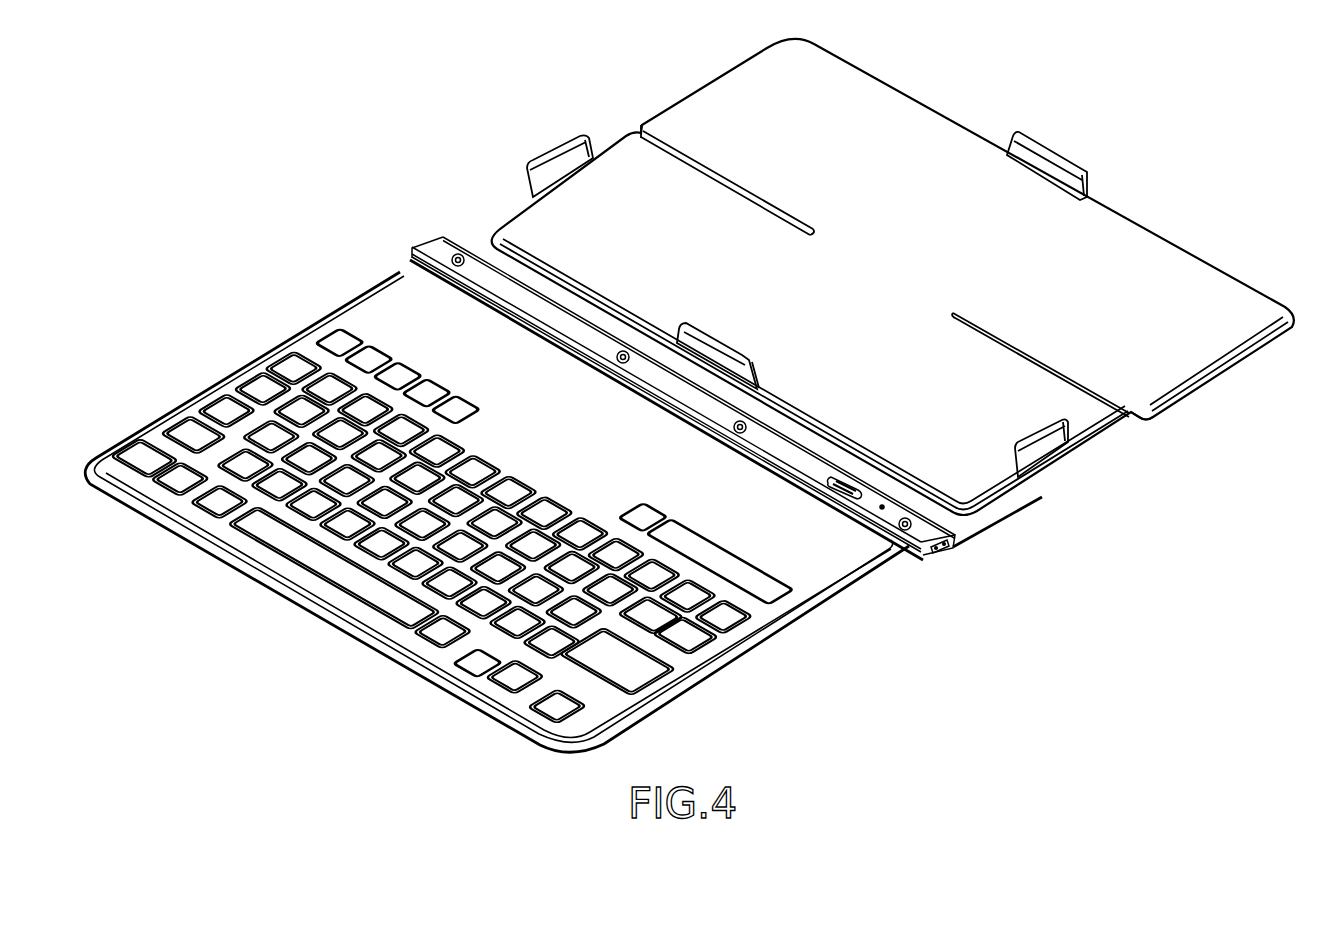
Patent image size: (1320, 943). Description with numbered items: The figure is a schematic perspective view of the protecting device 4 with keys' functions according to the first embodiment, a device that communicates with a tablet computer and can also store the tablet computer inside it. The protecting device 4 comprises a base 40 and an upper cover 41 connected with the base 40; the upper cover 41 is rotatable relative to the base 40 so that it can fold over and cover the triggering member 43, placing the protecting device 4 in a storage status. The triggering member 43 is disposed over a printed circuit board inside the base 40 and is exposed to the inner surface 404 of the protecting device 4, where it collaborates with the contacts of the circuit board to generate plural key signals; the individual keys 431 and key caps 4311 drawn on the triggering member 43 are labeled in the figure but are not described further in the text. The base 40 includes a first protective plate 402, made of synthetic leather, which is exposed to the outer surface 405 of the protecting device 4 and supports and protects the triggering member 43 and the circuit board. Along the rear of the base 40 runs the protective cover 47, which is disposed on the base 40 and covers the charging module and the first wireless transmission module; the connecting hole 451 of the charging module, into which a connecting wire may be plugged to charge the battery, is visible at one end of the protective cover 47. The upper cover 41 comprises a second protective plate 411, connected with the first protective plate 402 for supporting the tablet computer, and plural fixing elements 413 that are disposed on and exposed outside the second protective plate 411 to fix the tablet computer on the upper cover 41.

The protecting device 4 is at (417, 97).
The base 40 is at (563, 506).
The first protective plate 402 is at (817, 607).
The inner surface 404 is at (862, 558).
The outer surface 405 is at (762, 650).
The upper cover 41 is at (893, 277).
The second protective plate 411 is at (1130, 420).
The fixing elements 413 is at (1046, 164).
The triggering member 43 is at (451, 502).
The key 431 is at (617, 662).
The key cap 4311 is at (245, 400).
The connecting hole 451 is at (938, 553).
The protective cover 47 is at (681, 408).